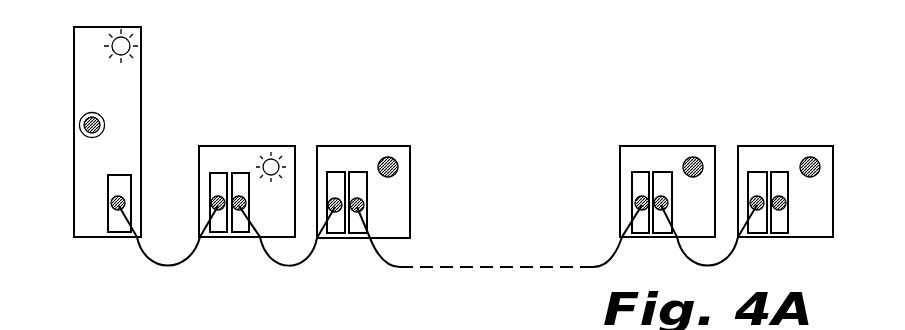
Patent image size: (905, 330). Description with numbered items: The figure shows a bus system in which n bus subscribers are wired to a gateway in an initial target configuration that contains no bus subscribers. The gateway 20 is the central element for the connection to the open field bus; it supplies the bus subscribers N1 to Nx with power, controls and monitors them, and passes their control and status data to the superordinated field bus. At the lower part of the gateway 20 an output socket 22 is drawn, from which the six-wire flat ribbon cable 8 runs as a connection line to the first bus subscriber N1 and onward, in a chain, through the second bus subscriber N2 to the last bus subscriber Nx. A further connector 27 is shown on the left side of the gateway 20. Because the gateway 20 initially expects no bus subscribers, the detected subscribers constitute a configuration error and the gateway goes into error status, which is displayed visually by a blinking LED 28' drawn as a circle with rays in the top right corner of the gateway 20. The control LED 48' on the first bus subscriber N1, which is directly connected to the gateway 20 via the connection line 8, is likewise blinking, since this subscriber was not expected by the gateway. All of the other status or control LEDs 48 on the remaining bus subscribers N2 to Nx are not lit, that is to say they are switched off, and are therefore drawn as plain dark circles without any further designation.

The gateway 20 is at (117, 109).
The blinking LED 28' is at (152, 42).
The connector port 27 is at (78, 125).
The socket 22 is at (122, 186).
The flat ribbon cable 8 is at (190, 257).
The blinking LED 48' is at (294, 138).
The status or control LED 48 is at (599, 138).
The first bus subscriber N1 is at (219, 153).
The second bus subscriber N2 is at (347, 157).
The last bus subscriber Nx is at (777, 165).